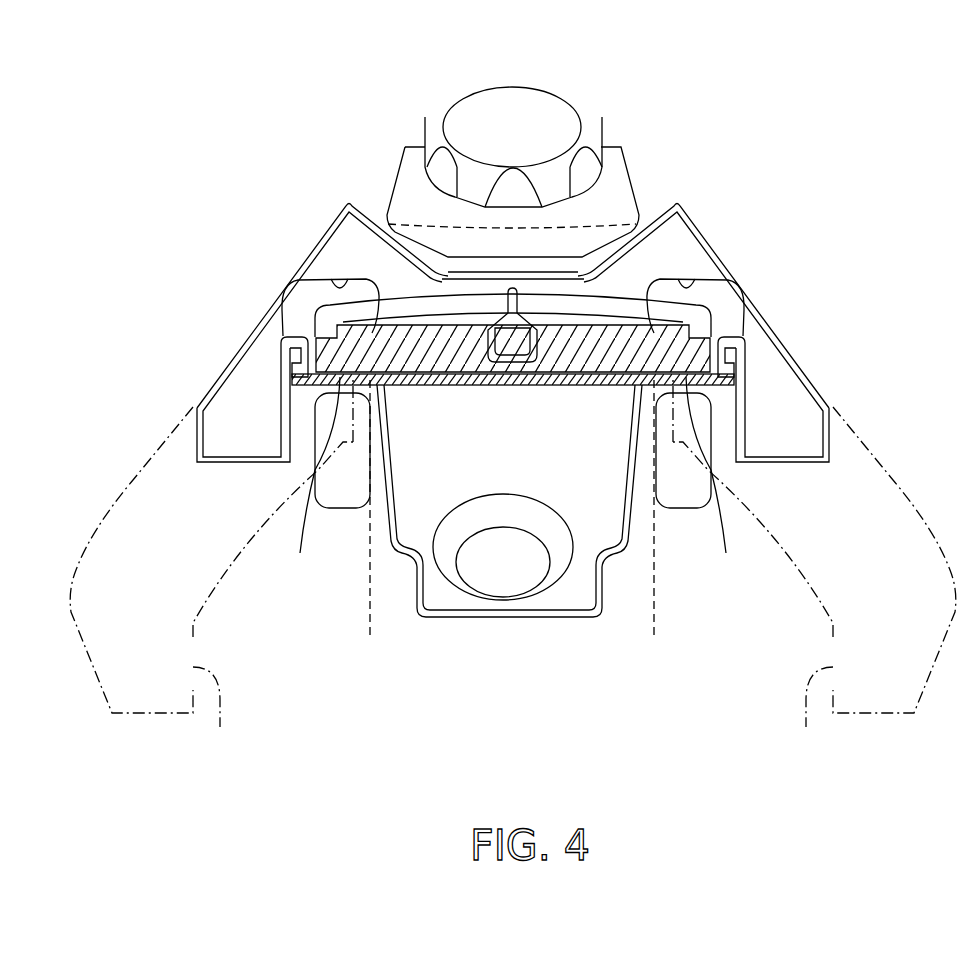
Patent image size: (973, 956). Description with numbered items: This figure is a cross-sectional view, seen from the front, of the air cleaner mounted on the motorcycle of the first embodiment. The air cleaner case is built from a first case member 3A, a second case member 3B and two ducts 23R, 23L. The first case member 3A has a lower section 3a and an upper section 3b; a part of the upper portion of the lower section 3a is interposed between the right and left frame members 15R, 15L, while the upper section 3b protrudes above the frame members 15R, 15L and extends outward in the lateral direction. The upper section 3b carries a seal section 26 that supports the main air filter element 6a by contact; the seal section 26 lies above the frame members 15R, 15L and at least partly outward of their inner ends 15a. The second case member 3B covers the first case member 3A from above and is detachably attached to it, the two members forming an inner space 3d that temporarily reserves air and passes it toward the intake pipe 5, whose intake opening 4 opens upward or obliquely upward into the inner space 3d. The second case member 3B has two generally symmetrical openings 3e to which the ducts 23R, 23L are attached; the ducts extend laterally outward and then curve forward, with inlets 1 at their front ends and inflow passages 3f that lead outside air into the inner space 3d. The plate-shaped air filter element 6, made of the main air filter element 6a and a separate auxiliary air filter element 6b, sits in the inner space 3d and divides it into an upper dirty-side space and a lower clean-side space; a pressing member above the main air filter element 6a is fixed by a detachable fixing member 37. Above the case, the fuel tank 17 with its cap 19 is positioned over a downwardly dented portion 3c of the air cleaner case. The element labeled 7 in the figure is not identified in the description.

The inlets 1 is at (513, 711).
The first case member 3A is at (509, 557).
The second case member 3B is at (730, 270).
The lower section 3a is at (563, 619).
The upper section 3b is at (630, 547).
The downwardly dented portion 3c is at (446, 262).
The inner space 3d is at (500, 443).
The openings 3e is at (334, 287).
The inflow passages 3f is at (300, 302).
The intake opening 4 is at (483, 583).
The intake pipe 5 is at (538, 599).
The air filter element 6 is at (590, 335).
The main air filter element 6a is at (740, 305).
The auxiliary air filter element 6b is at (724, 356).
The flange 7 is at (580, 380).
The right frame member 15R is at (340, 510).
The left frame member 15L is at (688, 510).
The inner ends 15a is at (512, 529).
The fuel tank 17 is at (620, 172).
The cap 19 is at (550, 103).
The right duct 23R is at (123, 493).
The left duct 23L is at (903, 493).
The seal section 26 is at (512, 481).
The fixing member 37 is at (492, 347).